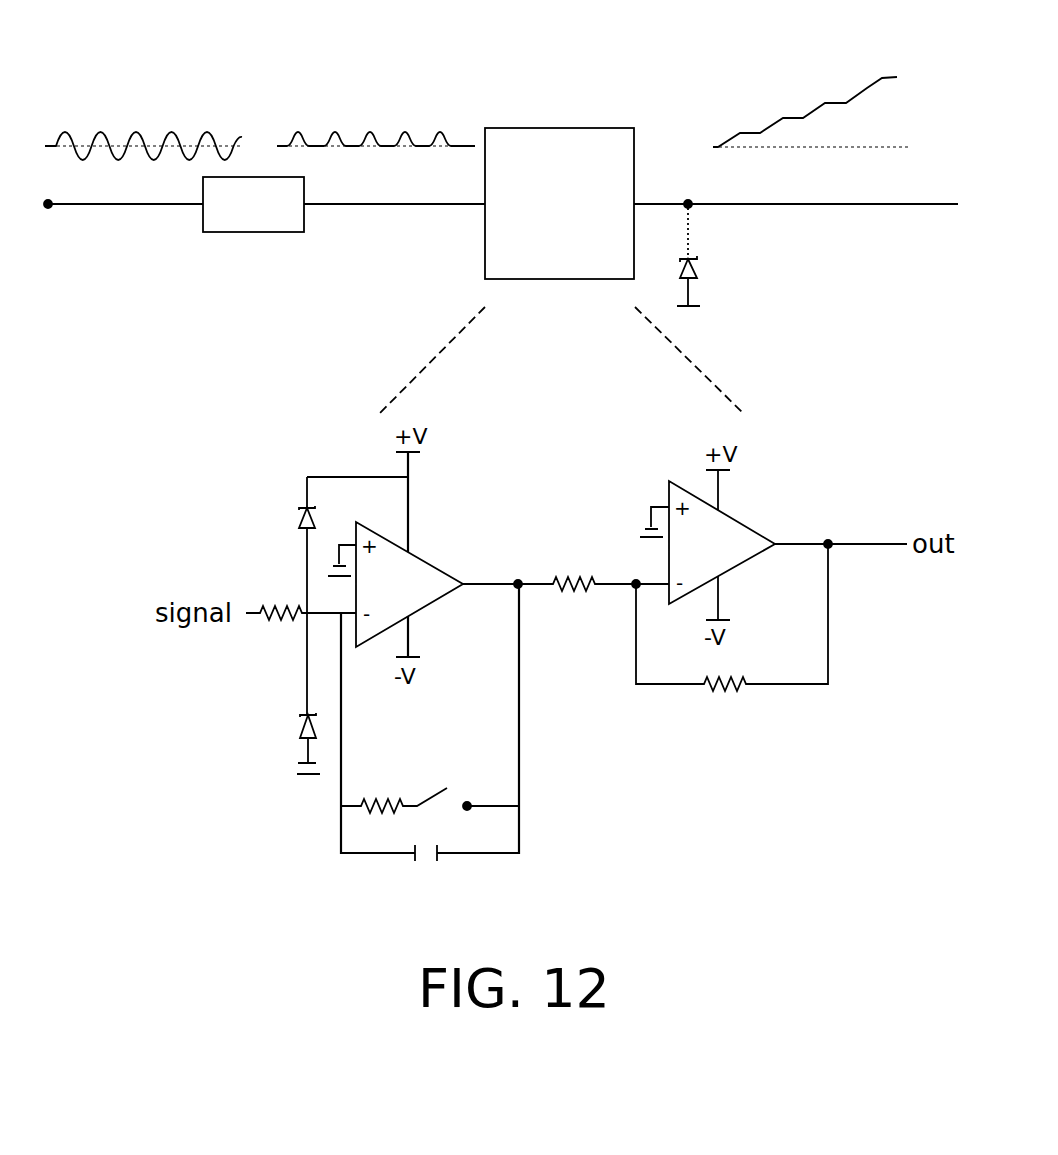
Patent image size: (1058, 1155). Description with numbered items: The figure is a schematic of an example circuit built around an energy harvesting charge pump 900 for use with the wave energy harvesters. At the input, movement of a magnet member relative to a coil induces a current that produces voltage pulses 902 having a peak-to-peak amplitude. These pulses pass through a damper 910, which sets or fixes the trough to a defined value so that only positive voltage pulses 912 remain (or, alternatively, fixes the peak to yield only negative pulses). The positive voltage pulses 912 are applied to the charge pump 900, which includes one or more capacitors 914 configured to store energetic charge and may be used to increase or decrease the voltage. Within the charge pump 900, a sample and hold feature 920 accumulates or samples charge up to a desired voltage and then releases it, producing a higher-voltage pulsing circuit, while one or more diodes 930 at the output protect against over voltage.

The energy harvesting charge pump 900 is at (536, 206).
The voltage pulses 902 is at (133, 116).
The damper 910 is at (229, 218).
The positive voltage pulses 912 is at (366, 116).
The capacitor 914 is at (788, 102).
The sample and hold feature 920 is at (467, 776).
The diode 930 is at (714, 295).